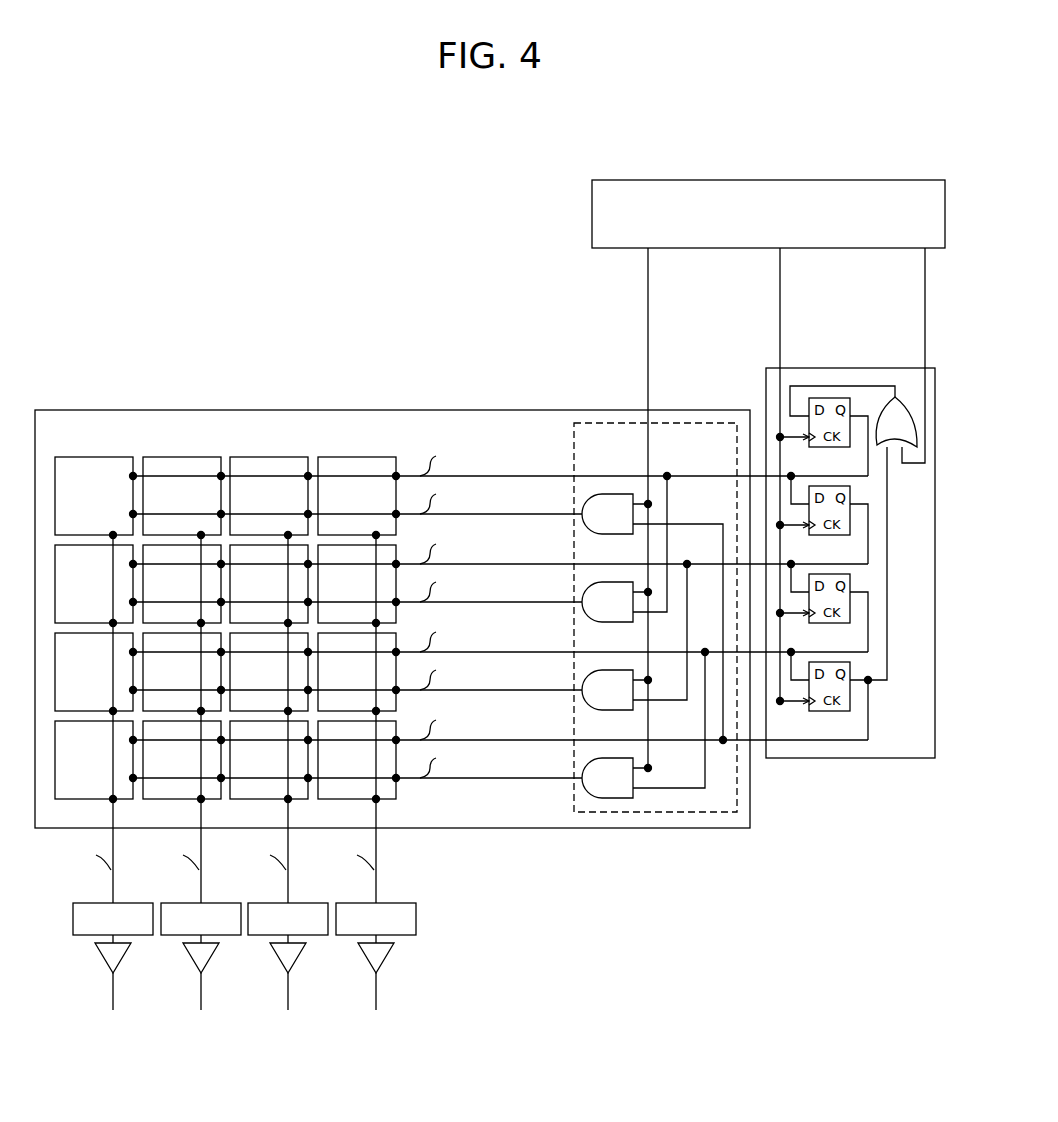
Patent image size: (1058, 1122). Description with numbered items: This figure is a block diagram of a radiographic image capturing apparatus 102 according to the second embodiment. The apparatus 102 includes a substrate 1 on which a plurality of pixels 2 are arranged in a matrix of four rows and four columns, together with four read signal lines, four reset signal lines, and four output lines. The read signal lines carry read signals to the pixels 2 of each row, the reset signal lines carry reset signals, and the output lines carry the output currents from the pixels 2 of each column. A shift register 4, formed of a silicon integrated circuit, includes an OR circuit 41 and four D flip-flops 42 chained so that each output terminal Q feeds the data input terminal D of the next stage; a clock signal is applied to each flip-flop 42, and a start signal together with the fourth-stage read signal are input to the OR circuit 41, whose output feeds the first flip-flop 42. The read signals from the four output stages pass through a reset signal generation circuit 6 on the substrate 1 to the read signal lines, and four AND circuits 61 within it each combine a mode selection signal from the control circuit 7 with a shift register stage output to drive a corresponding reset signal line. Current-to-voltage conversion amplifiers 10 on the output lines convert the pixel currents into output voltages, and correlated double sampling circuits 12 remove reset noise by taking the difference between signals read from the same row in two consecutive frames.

The radiographic image capturing apparatus 102 is at (727, 145).
The substrate 1 is at (451, 641).
The pixel 2 is at (76, 457).
The shift register 4 is at (850, 547).
The reset signal generation circuit 6 is at (735, 538).
The control circuit 7 is at (876, 183).
The current-to-voltage conversion amplifier 10 is at (103, 958).
The correlated double sampling circuit 12 is at (72, 918).
The OR circuit 41 is at (896, 455).
The D flip-flop 42 is at (833, 447).
The AND circuit 61 is at (622, 535).